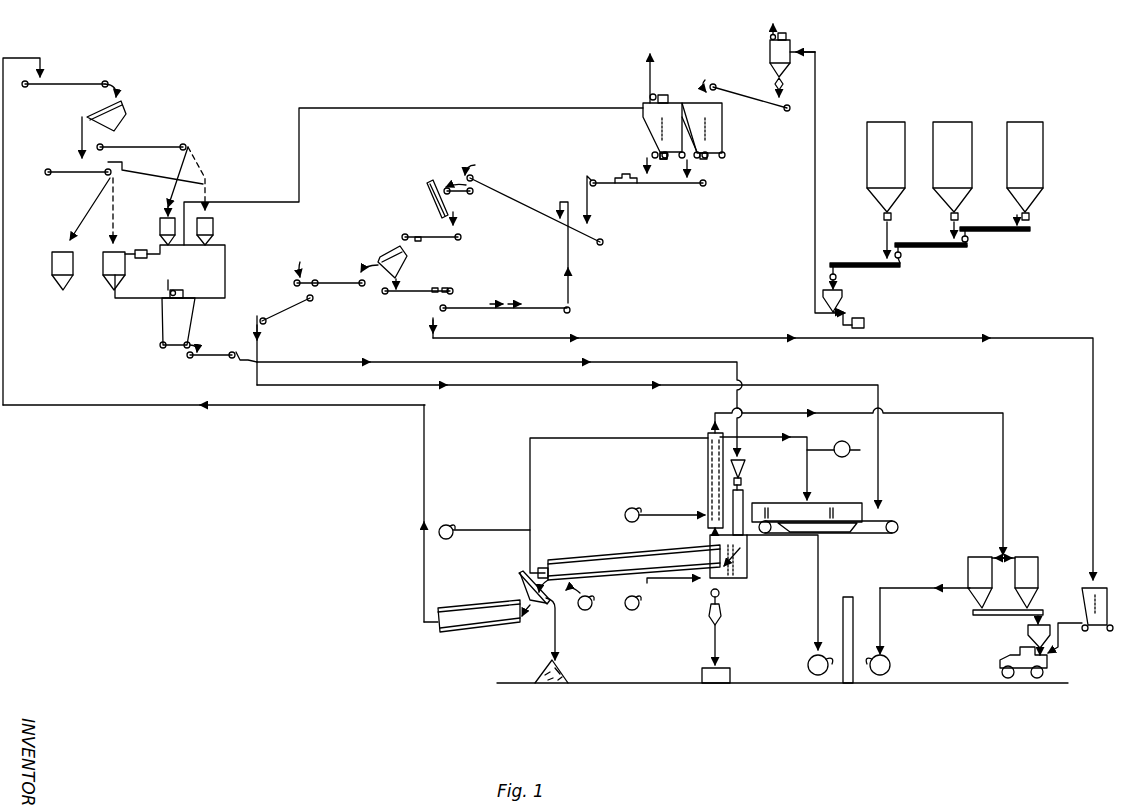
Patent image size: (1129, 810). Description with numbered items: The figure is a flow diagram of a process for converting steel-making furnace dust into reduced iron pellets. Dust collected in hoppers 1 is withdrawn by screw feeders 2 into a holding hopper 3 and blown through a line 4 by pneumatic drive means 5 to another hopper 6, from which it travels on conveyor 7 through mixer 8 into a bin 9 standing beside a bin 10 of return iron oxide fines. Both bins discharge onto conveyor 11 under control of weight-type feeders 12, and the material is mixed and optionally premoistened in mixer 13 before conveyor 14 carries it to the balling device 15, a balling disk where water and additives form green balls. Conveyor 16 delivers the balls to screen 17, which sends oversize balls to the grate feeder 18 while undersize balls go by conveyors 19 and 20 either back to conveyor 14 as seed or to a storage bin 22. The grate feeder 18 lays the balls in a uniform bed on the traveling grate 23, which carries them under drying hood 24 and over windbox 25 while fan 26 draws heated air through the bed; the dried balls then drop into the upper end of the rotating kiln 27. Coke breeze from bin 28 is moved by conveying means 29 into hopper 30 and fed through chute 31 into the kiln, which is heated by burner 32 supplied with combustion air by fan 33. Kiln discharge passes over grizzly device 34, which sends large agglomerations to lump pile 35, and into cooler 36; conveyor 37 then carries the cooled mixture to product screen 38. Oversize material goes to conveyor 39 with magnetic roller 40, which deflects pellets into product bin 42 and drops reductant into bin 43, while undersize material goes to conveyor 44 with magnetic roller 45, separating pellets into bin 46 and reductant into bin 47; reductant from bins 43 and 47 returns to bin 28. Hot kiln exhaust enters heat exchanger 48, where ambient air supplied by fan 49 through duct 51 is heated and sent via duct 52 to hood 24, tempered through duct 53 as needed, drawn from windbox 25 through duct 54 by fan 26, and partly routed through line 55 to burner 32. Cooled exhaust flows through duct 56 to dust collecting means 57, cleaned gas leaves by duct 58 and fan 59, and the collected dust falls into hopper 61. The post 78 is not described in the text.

The hoppers 1 is at (947, 122).
The screw feeder 2 is at (871, 268).
The holding hopper 3 is at (845, 298).
The line 4 is at (812, 185).
The pneumatic drive means 5 is at (850, 322).
The hopper 6 is at (769, 50).
The conveyor 7 is at (776, 101).
The mixer 8 is at (743, 88).
The bin 9 is at (724, 122).
The bin 10 is at (652, 118).
The conveyor 11 is at (640, 185).
The weight-type feeders 12 is at (666, 160).
The mixer 13 is at (615, 176).
The conveyor 14 is at (517, 205).
The balling device 15 is at (427, 203).
The conveyor 16 is at (443, 240).
The screen 17 is at (389, 250).
The grate feeder 18 is at (900, 443).
The conveyor 19 is at (410, 293).
The conveyor 20 is at (481, 308).
The storage bin 22 is at (1085, 600).
The traveling grate 23 is at (871, 517).
The drying hood 24 is at (833, 503).
The windbox 25 is at (825, 531).
The fan 26 is at (808, 665).
The kiln 27 is at (602, 560).
The bin 28 is at (165, 318).
The conveying means 29 is at (212, 358).
The hopper 30 is at (743, 468).
The chute 31 is at (745, 499).
The burner 32 is at (546, 566).
The fan 33 is at (446, 526).
The grizzly device 34 is at (541, 606).
The lump pile 35 is at (562, 671).
The cooler 36 is at (460, 626).
The conveyor 37 is at (76, 80).
The product screen 38 is at (124, 108).
The conveyor 39 is at (70, 170).
The magnetic roller 40 is at (104, 176).
The product bin 42 is at (57, 266).
The bin 43 is at (110, 268).
The conveyor 44 is at (166, 146).
The magnetic roller 45 is at (190, 147).
The bin 46 is at (162, 222).
The bin 47 is at (215, 226).
The heat exchanger 48 is at (705, 458).
The fan 49 is at (632, 508).
The duct 51 is at (665, 513).
The duct 52 is at (763, 458).
The duct 53 is at (823, 448).
The duct 54 is at (816, 595).
The line 55 is at (615, 437).
The duct 56 is at (955, 412).
The dust collecting means 57 is at (970, 557).
The duct 58 is at (916, 588).
The fan 59 is at (892, 663).
The hopper 61 is at (1026, 630).
The post 78 is at (845, 597).